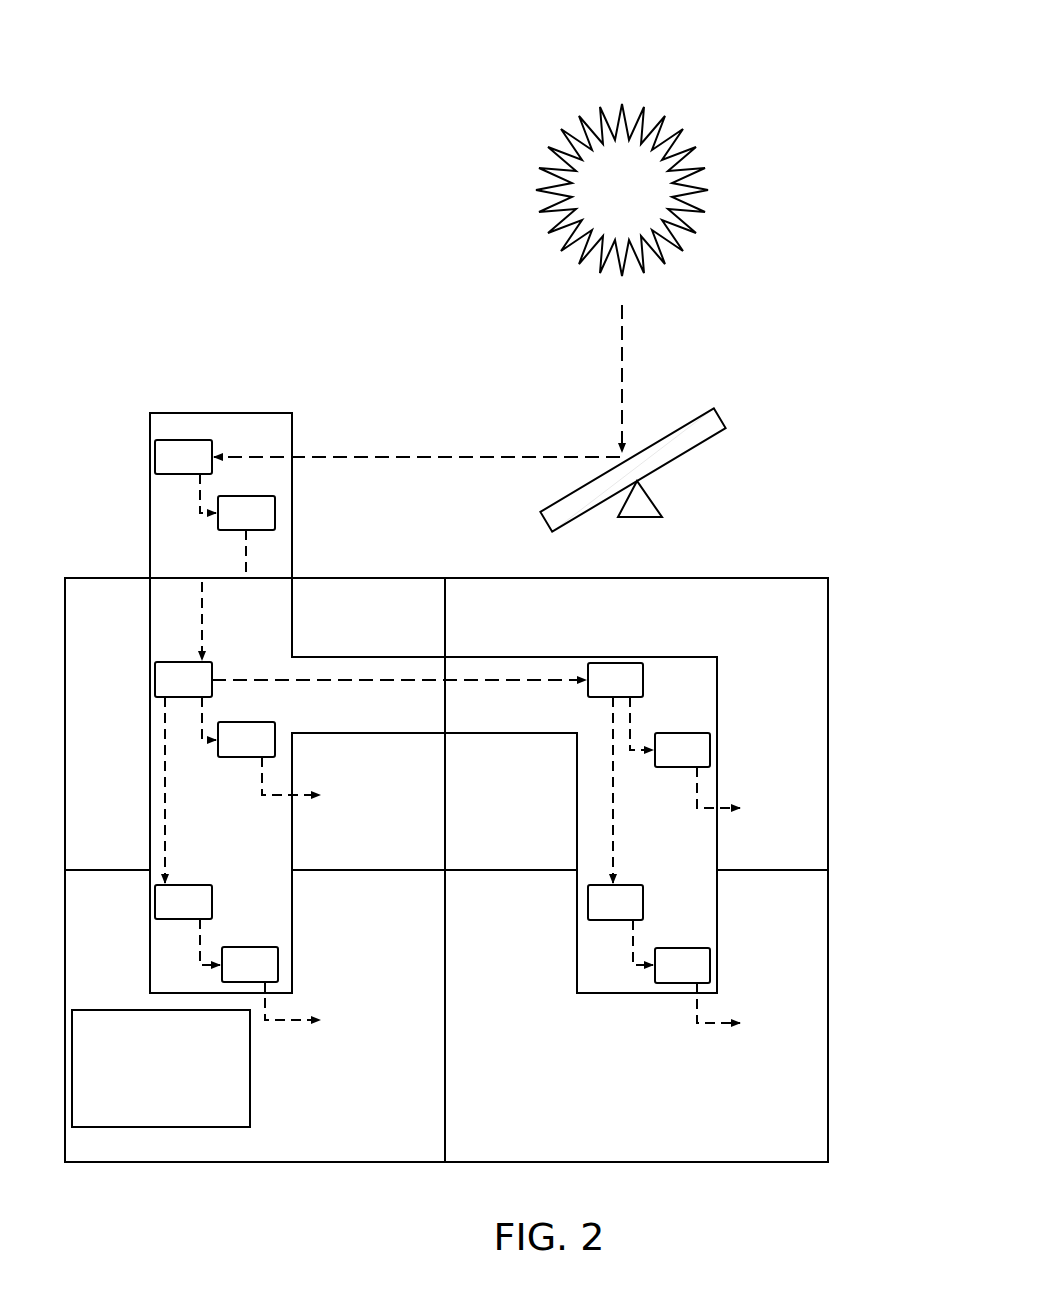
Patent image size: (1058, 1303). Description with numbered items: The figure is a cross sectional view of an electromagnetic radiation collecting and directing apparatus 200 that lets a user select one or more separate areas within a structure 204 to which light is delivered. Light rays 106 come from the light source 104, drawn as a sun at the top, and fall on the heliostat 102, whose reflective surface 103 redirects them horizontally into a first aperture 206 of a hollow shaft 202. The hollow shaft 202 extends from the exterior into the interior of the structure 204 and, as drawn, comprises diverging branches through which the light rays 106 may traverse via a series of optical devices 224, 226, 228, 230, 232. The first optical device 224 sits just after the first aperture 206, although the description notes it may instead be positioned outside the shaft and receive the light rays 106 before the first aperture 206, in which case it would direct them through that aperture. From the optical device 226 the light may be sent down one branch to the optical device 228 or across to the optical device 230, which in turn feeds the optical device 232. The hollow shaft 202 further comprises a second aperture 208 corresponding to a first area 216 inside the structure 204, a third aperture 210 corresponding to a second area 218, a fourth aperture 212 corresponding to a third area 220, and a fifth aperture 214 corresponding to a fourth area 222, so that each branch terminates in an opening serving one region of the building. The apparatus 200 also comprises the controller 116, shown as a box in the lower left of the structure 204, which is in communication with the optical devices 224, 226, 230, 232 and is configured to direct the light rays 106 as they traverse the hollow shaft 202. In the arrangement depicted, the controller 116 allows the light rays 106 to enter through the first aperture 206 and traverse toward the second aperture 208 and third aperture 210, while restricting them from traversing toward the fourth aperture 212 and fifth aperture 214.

The electromagnetic radiation collecting and directing apparatus 200 is at (296, 70).
The light source 104 is at (622, 190).
The light rays 106 is at (437, 455).
The heliostat 102 is at (737, 400).
The reflective surface 103 is at (678, 424).
The hollow shaft 202 is at (168, 412).
The structure 204 is at (829, 632).
The first aperture 206 is at (185, 476).
The first optical device 224 is at (238, 578).
The optical device 226 is at (370, 772).
The second aperture 208 is at (269, 758).
The optical device 228 is at (187, 925).
The third aperture 210 is at (271, 983).
The optical device 230 is at (620, 773).
The fourth aperture 212 is at (697, 770).
The optical device 232 is at (620, 925).
The fifth aperture 214 is at (697, 985).
The first area 216 is at (434, 870).
The second area 218 is at (241, 1009).
The third area 220 is at (772, 851).
The fourth area 222 is at (702, 1144).
The controller 116 is at (161, 1068).